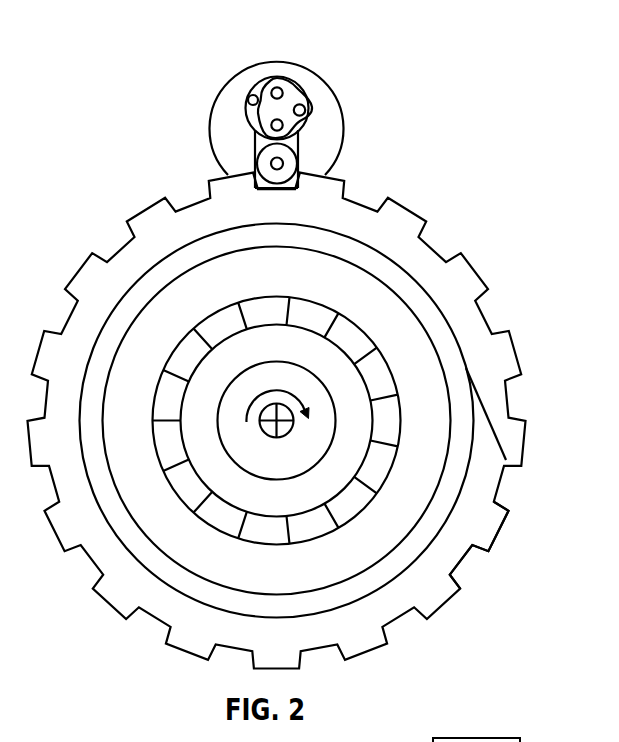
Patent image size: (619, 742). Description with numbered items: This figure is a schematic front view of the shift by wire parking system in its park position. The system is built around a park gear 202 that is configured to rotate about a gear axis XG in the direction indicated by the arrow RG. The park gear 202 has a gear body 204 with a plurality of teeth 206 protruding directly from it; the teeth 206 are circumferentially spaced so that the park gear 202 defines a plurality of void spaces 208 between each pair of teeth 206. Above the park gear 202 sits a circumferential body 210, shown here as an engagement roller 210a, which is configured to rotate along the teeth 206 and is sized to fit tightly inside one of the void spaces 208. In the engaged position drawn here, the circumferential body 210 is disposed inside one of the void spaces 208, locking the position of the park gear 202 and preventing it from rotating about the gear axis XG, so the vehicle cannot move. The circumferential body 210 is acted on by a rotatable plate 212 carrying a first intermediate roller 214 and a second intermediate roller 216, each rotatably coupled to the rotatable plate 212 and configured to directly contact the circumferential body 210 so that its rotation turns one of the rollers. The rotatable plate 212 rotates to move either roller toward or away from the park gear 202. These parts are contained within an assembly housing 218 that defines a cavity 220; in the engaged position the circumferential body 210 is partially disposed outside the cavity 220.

The park gear 202 is at (465, 426).
The gear body 204 is at (481, 508).
The teeth 206 is at (507, 528).
The void spaces 208 is at (467, 561).
The circumferential body 210 is at (263, 164).
The engagement roller 210a is at (291, 164).
The rotatable plate 212 is at (305, 108).
The first intermediate roller 214 is at (277, 79).
The second intermediate roller 216 is at (248, 101).
The assembly housing 218 is at (304, 64).
The cavity 220 is at (259, 103).
The rotation direction arrow RG is at (280, 390).
The gear axis XG is at (270, 436).